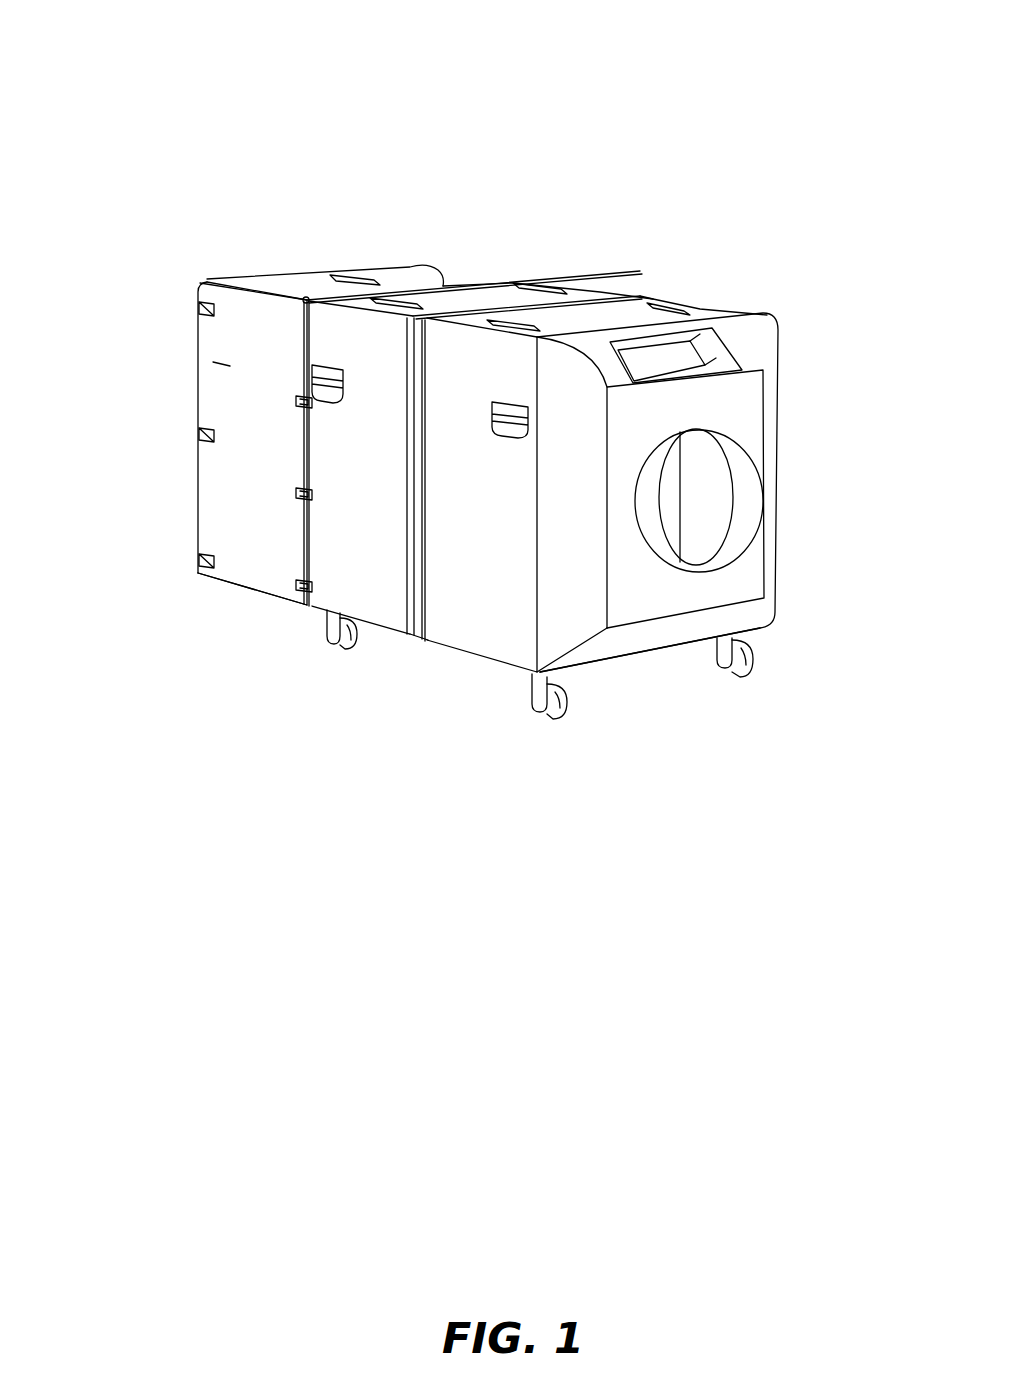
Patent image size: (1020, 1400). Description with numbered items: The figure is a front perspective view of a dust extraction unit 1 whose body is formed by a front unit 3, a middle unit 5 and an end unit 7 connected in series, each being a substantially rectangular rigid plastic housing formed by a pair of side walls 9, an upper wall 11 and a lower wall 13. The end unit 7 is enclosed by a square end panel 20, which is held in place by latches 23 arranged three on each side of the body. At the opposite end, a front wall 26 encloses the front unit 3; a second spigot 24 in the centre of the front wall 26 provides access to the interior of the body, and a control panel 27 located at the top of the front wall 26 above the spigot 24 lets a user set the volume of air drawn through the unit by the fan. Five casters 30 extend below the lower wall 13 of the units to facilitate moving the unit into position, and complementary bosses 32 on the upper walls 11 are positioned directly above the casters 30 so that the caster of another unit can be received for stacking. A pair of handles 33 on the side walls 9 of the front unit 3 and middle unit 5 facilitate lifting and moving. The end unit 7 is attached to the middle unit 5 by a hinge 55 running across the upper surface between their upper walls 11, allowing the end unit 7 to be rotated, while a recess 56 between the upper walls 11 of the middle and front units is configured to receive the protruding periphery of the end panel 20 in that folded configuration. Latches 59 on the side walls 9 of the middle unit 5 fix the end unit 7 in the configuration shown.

The dust extraction unit 1 is at (585, 62).
The front unit 3 is at (777, 417).
The middle unit 5 is at (520, 278).
The end unit 7 is at (213, 365).
The side walls 9 is at (237, 485).
The upper wall 11 is at (298, 282).
The lower wall 13 is at (227, 585).
The end panel 20 is at (197, 347).
The latches 23 is at (197, 310).
The second spigot 24 is at (757, 508).
The front wall 26 is at (773, 380).
The control panel 27 is at (690, 360).
The casters 30 is at (328, 645).
The complementary bosses 32 is at (363, 282).
The handles 33 is at (333, 407).
The hinge 55 is at (327, 298).
The recess 56 is at (612, 318).
The latches 59 is at (298, 399).